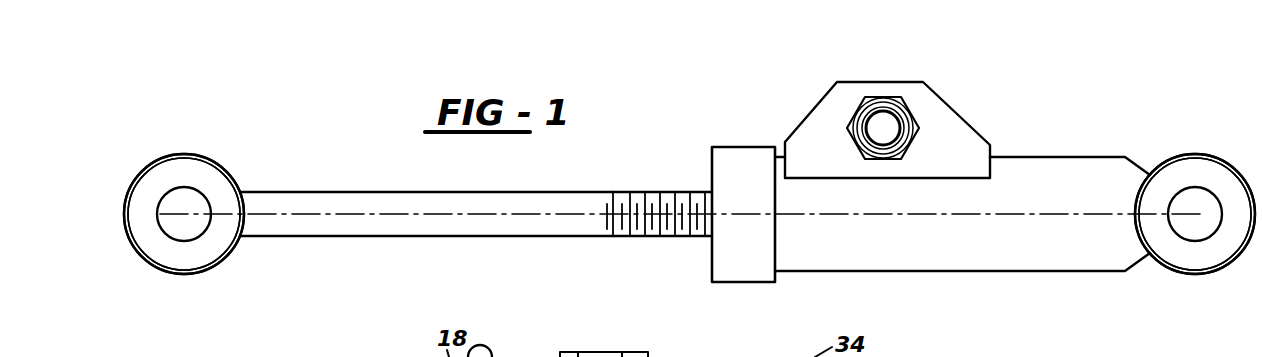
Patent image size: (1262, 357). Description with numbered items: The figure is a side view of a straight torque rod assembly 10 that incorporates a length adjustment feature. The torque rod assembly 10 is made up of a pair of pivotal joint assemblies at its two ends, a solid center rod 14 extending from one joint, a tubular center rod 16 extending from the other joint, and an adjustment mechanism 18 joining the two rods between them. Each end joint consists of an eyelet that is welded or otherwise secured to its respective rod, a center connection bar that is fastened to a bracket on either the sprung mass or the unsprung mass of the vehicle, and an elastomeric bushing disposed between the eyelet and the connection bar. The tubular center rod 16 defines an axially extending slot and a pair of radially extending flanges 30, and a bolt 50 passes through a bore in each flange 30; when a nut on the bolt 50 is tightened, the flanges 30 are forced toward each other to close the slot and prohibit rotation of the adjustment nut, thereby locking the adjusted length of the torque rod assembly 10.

The torque rod assembly 10 is at (1017, 53).
The solid center rod 14 is at (388, 228).
The tubular center rod 16 is at (867, 255).
The adjustment mechanism 18 is at (712, 132).
The radially extending flange 30 is at (962, 138).
The bolt 50 is at (883, 128).